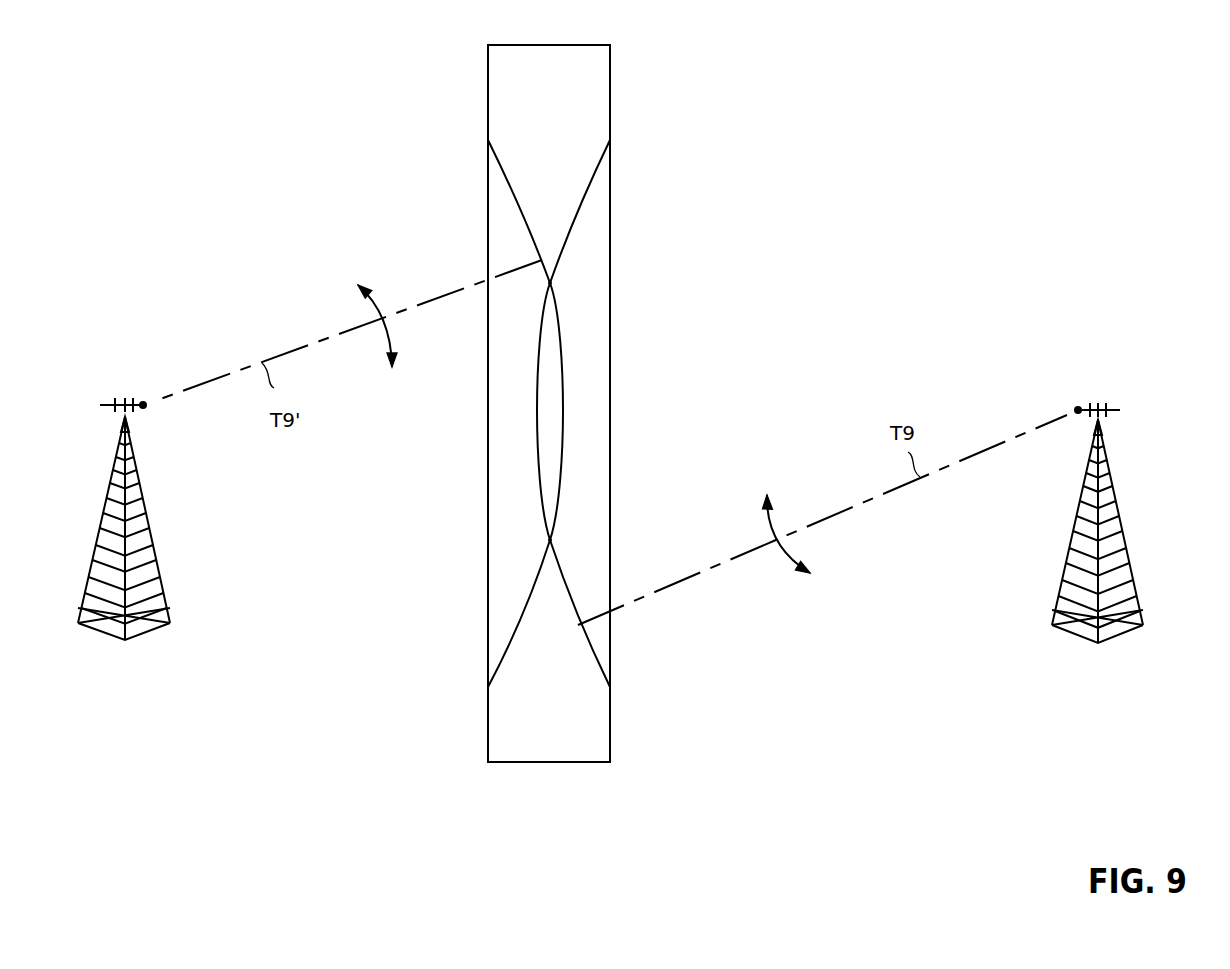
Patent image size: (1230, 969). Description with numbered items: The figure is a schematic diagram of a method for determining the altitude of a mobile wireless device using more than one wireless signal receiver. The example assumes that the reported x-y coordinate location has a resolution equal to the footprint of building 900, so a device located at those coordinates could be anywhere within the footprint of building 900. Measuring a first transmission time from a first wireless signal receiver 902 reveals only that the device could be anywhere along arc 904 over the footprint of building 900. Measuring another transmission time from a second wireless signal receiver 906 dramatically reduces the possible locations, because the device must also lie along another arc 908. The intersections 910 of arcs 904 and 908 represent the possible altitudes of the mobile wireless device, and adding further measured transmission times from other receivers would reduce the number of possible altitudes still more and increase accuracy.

The building 900 is at (602, 763).
The first wireless signal receiver 902 is at (1113, 410).
The arc 904 is at (597, 671).
The second wireless signal receiver 906 is at (100, 405).
The arc 908 is at (507, 165).
The intersections 910 is at (551, 285).